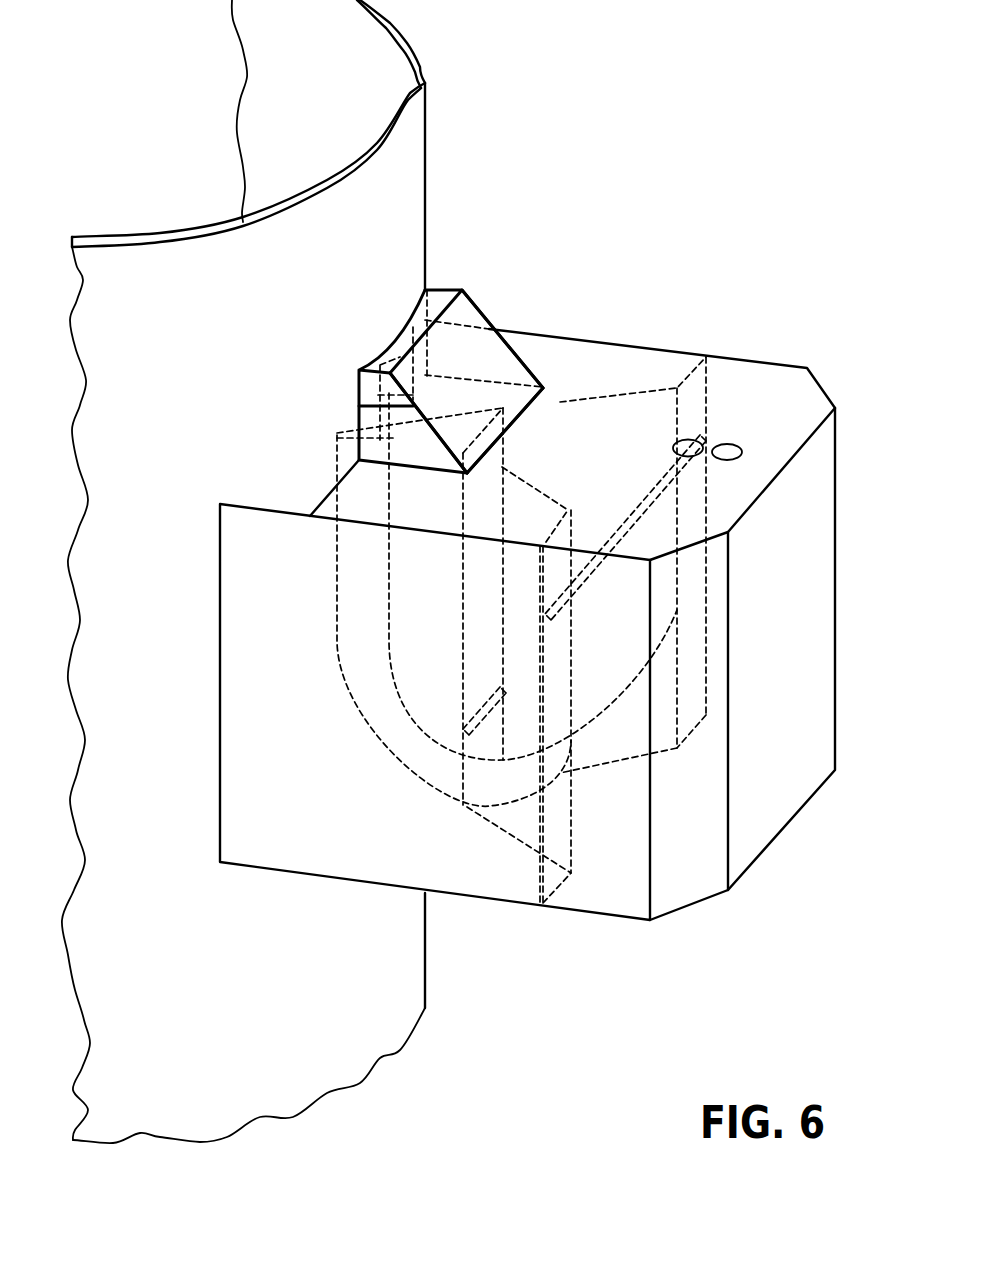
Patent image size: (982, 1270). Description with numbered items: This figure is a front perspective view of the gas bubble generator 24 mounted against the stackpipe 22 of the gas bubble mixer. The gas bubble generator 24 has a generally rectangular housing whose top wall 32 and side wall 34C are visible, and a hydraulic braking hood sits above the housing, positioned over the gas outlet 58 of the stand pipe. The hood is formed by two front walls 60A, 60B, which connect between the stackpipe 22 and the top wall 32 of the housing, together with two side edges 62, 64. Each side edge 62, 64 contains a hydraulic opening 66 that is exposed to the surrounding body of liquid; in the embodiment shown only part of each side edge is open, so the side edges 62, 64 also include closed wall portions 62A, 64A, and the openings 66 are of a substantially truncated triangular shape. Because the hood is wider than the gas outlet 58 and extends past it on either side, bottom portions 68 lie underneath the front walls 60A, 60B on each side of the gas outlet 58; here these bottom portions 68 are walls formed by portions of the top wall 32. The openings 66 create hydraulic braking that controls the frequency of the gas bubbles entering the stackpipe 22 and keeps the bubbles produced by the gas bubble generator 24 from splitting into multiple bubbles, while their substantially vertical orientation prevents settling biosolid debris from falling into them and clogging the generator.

The stackpipe 22 is at (427, 172).
The gas bubble generator 24 is at (822, 340).
The top wall 32 is at (623, 362).
The side wall 34C is at (320, 828).
The gas outlet 58 is at (540, 372).
The front wall 60A is at (435, 303).
The front wall 60B is at (420, 360).
The side edge 62 is at (392, 427).
The wall portion 62A is at (372, 392).
The side edge 64 is at (458, 425).
The wall portion 64A is at (486, 320).
The hydraulic opening 66 is at (515, 342).
The bottom portions 68 is at (468, 457).